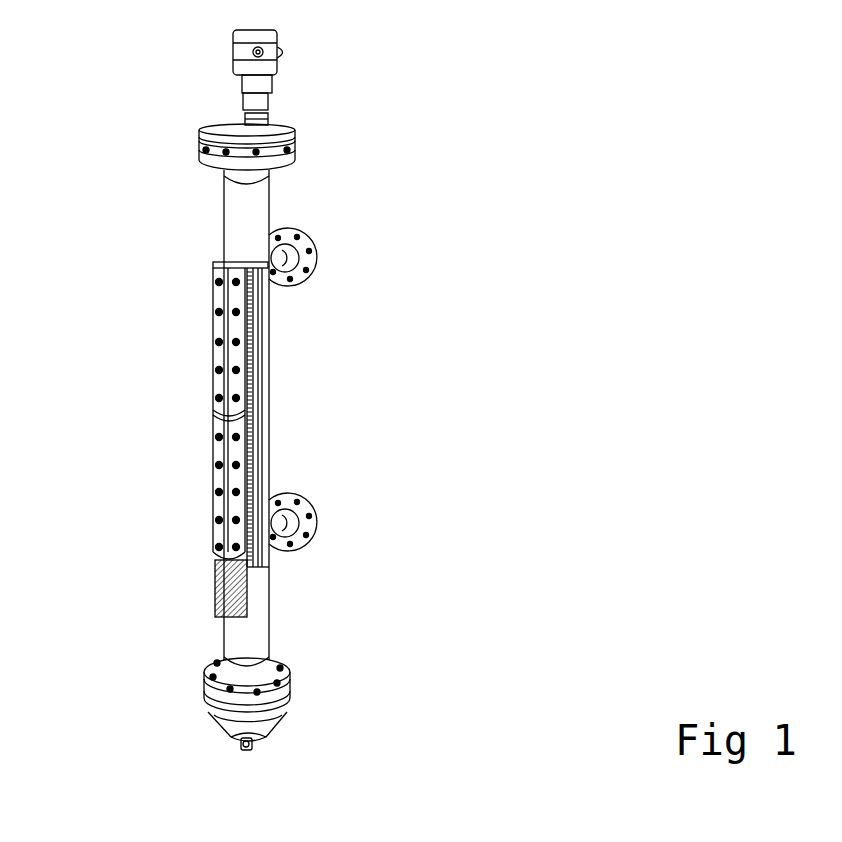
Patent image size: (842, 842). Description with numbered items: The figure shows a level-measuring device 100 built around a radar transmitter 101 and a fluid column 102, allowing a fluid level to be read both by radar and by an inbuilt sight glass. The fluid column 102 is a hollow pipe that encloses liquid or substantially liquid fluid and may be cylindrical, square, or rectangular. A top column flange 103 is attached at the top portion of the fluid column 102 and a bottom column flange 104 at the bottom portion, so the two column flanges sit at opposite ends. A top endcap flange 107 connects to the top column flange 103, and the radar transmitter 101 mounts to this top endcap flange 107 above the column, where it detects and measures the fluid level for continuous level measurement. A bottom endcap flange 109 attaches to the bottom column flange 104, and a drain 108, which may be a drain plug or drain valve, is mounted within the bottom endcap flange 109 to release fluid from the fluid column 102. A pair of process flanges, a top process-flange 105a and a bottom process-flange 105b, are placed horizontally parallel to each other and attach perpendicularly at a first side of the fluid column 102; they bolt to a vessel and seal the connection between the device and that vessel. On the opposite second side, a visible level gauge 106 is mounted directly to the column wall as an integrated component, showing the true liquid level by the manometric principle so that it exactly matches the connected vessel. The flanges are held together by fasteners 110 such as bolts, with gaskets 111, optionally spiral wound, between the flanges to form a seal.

The level-measuring device 100 is at (463, 98).
The radar transmitter 101 is at (280, 112).
The fluid column 102 is at (195, 749).
The top column flange 103 is at (291, 166).
The bottom column flange 104 is at (281, 685).
The top process-flange 105a is at (303, 244).
The bottom process-flange 105b is at (303, 515).
The visible level gauge 106 is at (233, 418).
The top endcap flange 107 is at (236, 127).
The drain 108 is at (249, 746).
The bottom endcap flange 109 is at (272, 718).
The fasteners 110 is at (272, 120).
The gaskets 111 is at (206, 150).